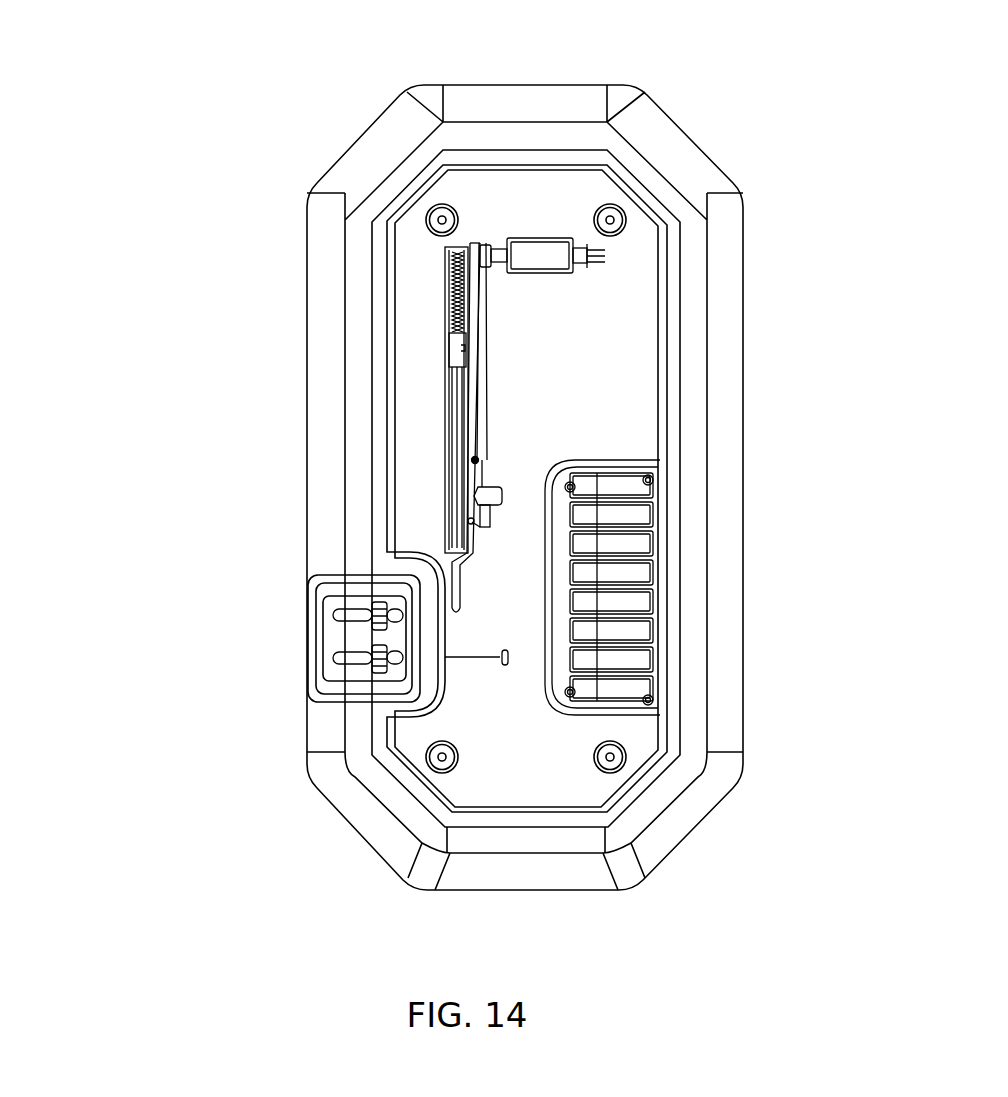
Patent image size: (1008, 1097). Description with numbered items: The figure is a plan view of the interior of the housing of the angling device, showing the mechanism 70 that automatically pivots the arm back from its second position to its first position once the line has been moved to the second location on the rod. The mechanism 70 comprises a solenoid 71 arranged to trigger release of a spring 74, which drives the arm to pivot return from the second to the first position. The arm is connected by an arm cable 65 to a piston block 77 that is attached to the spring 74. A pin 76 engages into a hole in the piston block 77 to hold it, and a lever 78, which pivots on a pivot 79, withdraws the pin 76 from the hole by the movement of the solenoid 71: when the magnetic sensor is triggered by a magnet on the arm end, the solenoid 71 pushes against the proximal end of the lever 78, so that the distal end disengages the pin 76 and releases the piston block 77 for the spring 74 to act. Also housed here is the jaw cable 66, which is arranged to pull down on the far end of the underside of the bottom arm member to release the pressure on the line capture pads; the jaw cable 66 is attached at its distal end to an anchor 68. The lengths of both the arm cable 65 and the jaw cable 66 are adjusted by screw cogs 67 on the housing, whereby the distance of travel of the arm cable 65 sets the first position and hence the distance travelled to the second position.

The arm cable 65 is at (457, 438).
The jaw cable 66 is at (333, 657).
The screw cog 67 is at (377, 613).
The anchor 68 is at (507, 660).
The mechanism 70 is at (492, 542).
The solenoid 71 is at (530, 243).
The spring 74 is at (450, 303).
The pin 76 is at (463, 523).
The piston block 77 is at (453, 355).
The lever 78 is at (485, 355).
The pivot 79 is at (478, 461).